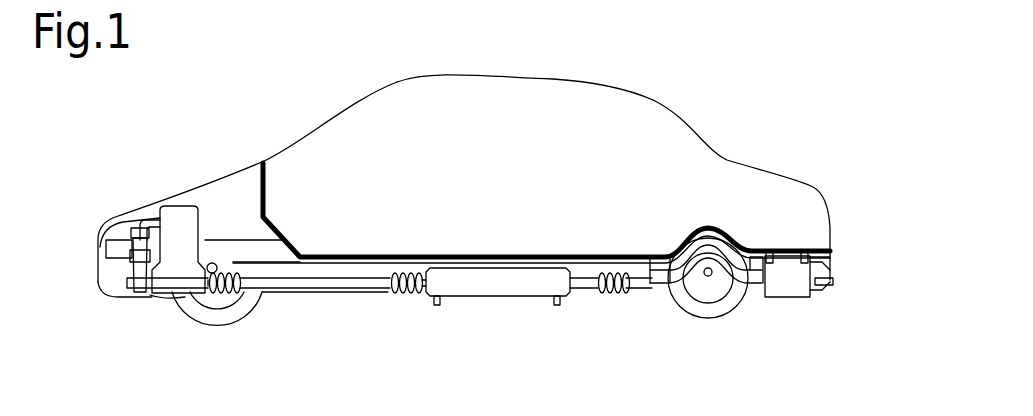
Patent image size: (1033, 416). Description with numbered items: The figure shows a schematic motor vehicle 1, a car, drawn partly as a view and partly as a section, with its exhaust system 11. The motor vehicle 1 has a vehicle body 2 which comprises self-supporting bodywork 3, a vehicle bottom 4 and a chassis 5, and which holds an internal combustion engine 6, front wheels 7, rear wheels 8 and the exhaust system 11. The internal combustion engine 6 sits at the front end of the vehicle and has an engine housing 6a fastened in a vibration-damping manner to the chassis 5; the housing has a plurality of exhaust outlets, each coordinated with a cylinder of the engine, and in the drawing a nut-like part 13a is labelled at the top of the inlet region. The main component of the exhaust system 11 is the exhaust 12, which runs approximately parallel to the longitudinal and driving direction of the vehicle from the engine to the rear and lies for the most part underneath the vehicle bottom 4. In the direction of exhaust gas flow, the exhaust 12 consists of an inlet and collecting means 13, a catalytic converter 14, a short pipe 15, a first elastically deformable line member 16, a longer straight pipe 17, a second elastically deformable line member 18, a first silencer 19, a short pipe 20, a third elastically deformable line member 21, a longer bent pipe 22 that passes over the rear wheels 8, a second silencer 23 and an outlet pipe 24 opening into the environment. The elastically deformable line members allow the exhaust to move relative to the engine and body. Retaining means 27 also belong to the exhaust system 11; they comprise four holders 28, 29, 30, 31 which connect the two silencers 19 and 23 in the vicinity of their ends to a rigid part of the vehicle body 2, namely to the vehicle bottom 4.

The motor vehicle 1 is at (134, 202).
The vehicle body 2 is at (286, 142).
The self-supporting bodywork 3 is at (553, 79).
The vehicle bottom 4 is at (336, 253).
The chassis 5 is at (102, 249).
The internal combustion engine 6 is at (188, 208).
The engine housing 6a is at (172, 218).
The front wheels 7 is at (218, 320).
The rear wheels 8 is at (725, 316).
The exhaust system 11 is at (127, 280).
The exhaust 12 is at (160, 303).
The inlet and collecting means 13 is at (140, 224).
The nut 13a is at (138, 236).
The catalytic converter 14 is at (130, 268).
The short pipe 15 is at (207, 318).
The first elastically deformable line member 16 is at (240, 296).
The longer, straight pipe 17 is at (340, 292).
The second elastically deformable line member 18 is at (410, 294).
The first silencer 19 is at (507, 298).
The short pipe 20 is at (580, 298).
The third elastically deformable line member 21 is at (614, 296).
The longer, bent pipe 22 is at (713, 288).
The second silencer 23 is at (792, 300).
The outlet pipe 24 is at (827, 288).
The retaining means 27 is at (820, 259).
The holder 28 is at (436, 306).
The holder 29 is at (557, 306).
The holder 30 is at (773, 298).
The holder 31 is at (804, 300).